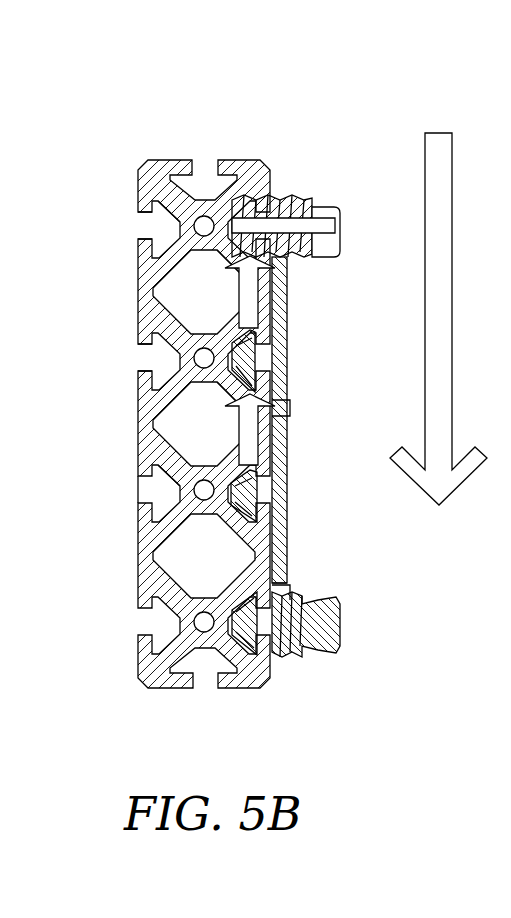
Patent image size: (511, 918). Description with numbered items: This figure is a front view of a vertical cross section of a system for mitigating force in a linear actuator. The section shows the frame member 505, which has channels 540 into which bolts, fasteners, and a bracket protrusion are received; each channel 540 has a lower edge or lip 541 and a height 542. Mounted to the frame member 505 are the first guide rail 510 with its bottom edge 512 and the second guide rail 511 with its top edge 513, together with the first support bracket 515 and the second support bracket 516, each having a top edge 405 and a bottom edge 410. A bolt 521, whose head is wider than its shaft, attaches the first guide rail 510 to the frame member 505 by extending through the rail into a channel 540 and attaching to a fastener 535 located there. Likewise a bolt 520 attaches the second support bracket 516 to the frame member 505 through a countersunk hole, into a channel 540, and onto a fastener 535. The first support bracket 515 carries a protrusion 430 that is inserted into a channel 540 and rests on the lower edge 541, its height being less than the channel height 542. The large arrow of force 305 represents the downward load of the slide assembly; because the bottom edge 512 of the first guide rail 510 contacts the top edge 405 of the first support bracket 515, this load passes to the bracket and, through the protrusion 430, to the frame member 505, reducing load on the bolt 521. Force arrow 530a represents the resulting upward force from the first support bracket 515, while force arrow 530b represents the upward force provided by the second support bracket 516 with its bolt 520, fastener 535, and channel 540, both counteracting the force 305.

The force 305 is at (433, 133).
The top edge 405 is at (290, 262).
The bottom edge 410 is at (290, 408).
The protrusion 430 is at (290, 353).
The frame member 505 is at (140, 172).
The first guide rail 510 is at (320, 205).
The second guide rail 511 is at (318, 640).
The bottom edge 512 is at (283, 197).
The top edge 513 is at (283, 660).
The first support bracket 515 is at (290, 333).
The second support bracket 516 is at (290, 548).
The bolt 520 is at (290, 500).
The bolt 521 is at (335, 227).
The force arrow 530a is at (235, 290).
The force arrow 530b is at (235, 440).
The fastener 535 is at (240, 256).
The channel 540 is at (140, 228).
The lower edge 541 is at (140, 373).
The height 542 is at (137, 478).